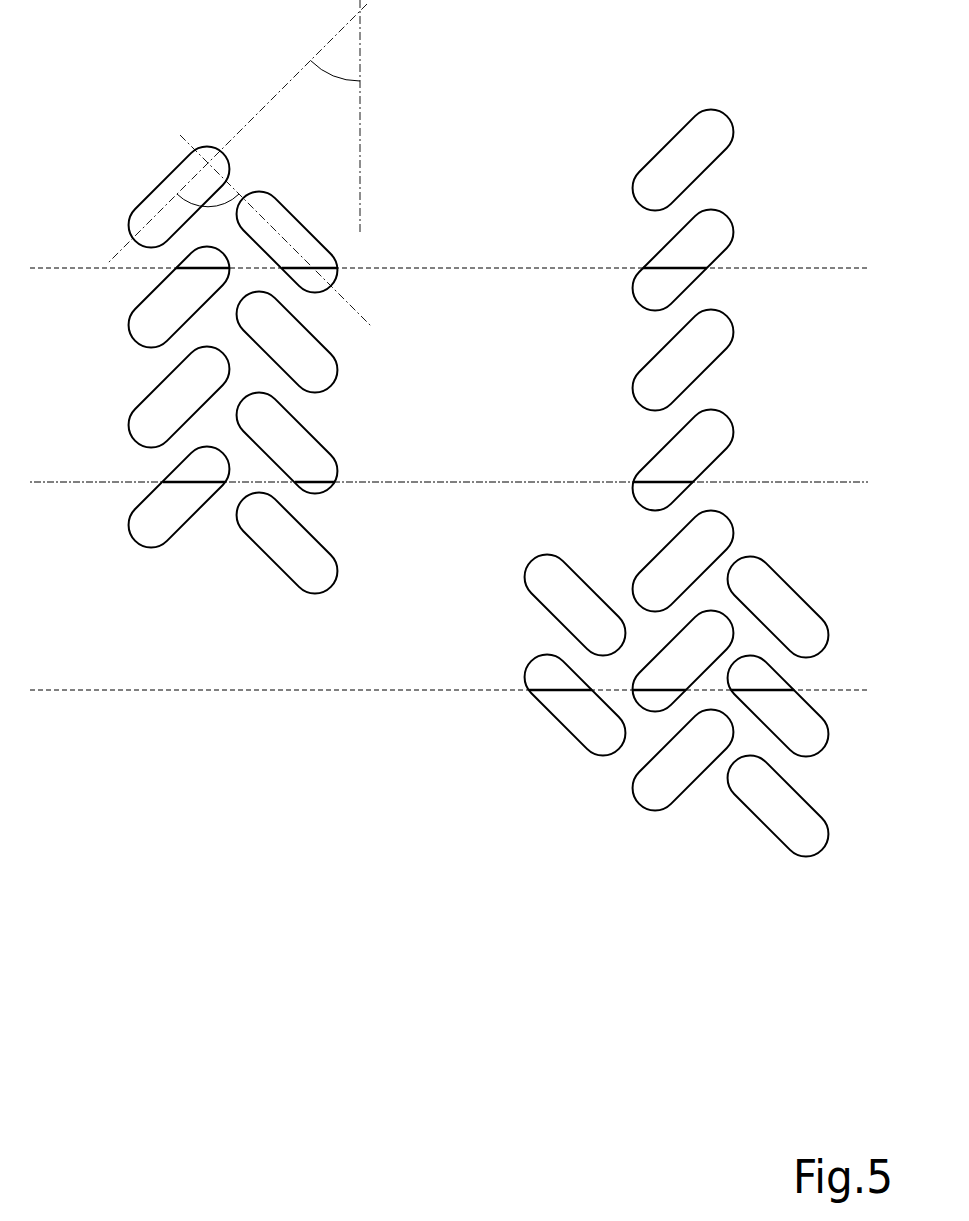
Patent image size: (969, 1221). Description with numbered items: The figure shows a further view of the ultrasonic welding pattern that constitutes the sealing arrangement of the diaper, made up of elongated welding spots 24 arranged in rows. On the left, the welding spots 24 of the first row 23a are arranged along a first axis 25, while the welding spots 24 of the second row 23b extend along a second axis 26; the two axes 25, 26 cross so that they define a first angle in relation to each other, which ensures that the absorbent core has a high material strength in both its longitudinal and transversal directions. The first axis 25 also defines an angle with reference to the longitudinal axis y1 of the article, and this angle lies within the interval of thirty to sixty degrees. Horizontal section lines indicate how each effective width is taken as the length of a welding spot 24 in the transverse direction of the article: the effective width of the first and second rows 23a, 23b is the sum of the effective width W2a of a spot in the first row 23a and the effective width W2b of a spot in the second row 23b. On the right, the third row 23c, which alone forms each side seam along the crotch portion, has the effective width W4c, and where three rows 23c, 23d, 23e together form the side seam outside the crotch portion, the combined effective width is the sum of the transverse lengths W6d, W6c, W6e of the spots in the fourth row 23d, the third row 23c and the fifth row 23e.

The first row 23a is at (183, 118).
The second row 23b is at (290, 190).
The third row 23c is at (647, 125).
The fourth row 23d is at (583, 865).
The fifth row 23e is at (745, 878).
The welding spot 24 is at (145, 537).
The first axis 25 is at (120, 253).
The second axis 26 is at (370, 325).
The longitudinal axis y1 is at (358, 153).
The effective width of a welding spot in the first row W2a is at (177, 270).
The effective width of a welding spot in the second row W2b is at (330, 263).
The effective width of the third row W4c is at (677, 267).
The length of a third-row welding spot in the transverse direction W6c is at (655, 690).
The length of a fourth-row welding spot in the transverse direction W6d is at (558, 690).
The length of a fifth-row welding spot in the transverse direction W6e is at (772, 690).